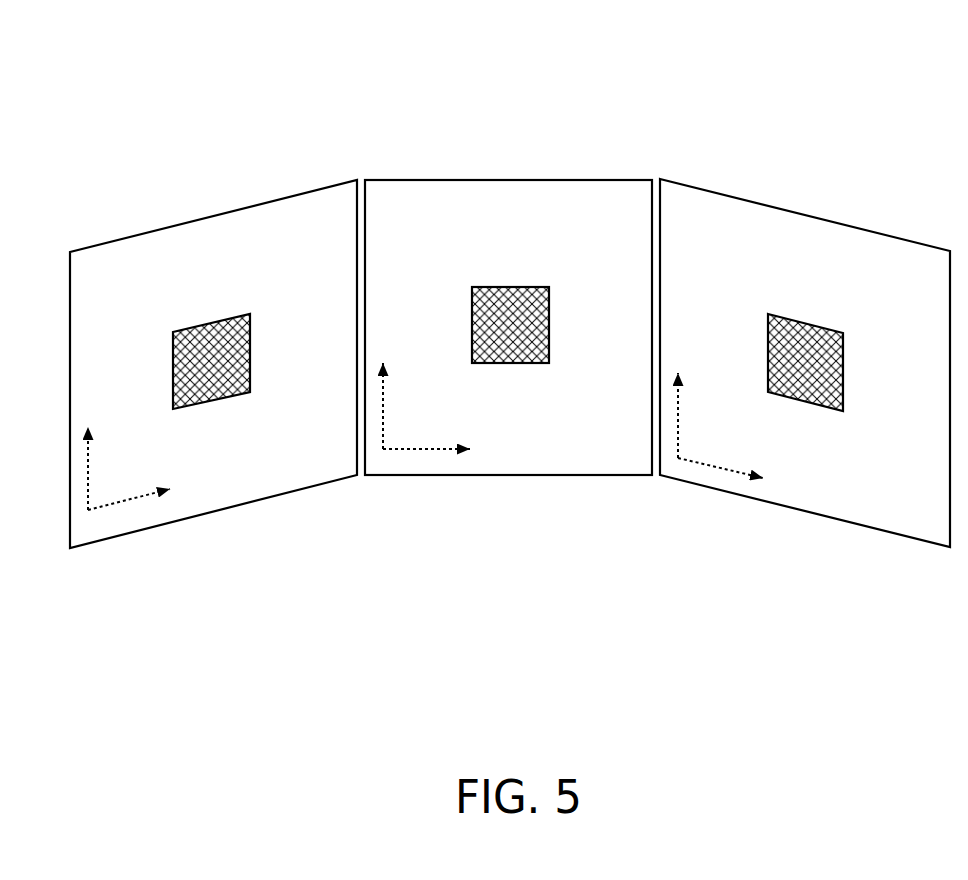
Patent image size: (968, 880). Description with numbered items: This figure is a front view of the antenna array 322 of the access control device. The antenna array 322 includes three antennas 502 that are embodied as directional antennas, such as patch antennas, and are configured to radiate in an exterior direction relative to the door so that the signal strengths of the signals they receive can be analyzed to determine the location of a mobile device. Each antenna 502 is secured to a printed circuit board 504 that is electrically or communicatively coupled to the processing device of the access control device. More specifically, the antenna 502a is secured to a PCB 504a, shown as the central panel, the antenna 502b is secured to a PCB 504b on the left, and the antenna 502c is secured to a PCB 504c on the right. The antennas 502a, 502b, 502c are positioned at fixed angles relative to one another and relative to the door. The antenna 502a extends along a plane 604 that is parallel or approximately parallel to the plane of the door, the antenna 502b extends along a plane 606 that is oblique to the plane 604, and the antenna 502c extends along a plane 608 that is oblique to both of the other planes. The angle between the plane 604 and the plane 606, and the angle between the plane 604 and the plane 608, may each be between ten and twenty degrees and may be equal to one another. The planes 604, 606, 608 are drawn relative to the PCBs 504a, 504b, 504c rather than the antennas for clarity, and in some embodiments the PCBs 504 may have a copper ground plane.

The antenna array 322 is at (80, 82).
The printed circuit board 504 is at (510, 331).
The PCB 504a is at (518, 178).
The PCB 504b is at (210, 214).
The PCB 504c is at (808, 218).
The antenna 502 is at (515, 318).
The antenna 502a is at (512, 285).
The antenna 502b is at (212, 323).
The antenna 502c is at (805, 325).
The plane 604 is at (426, 406).
The plane 606 is at (129, 468).
The plane 608 is at (720, 425).